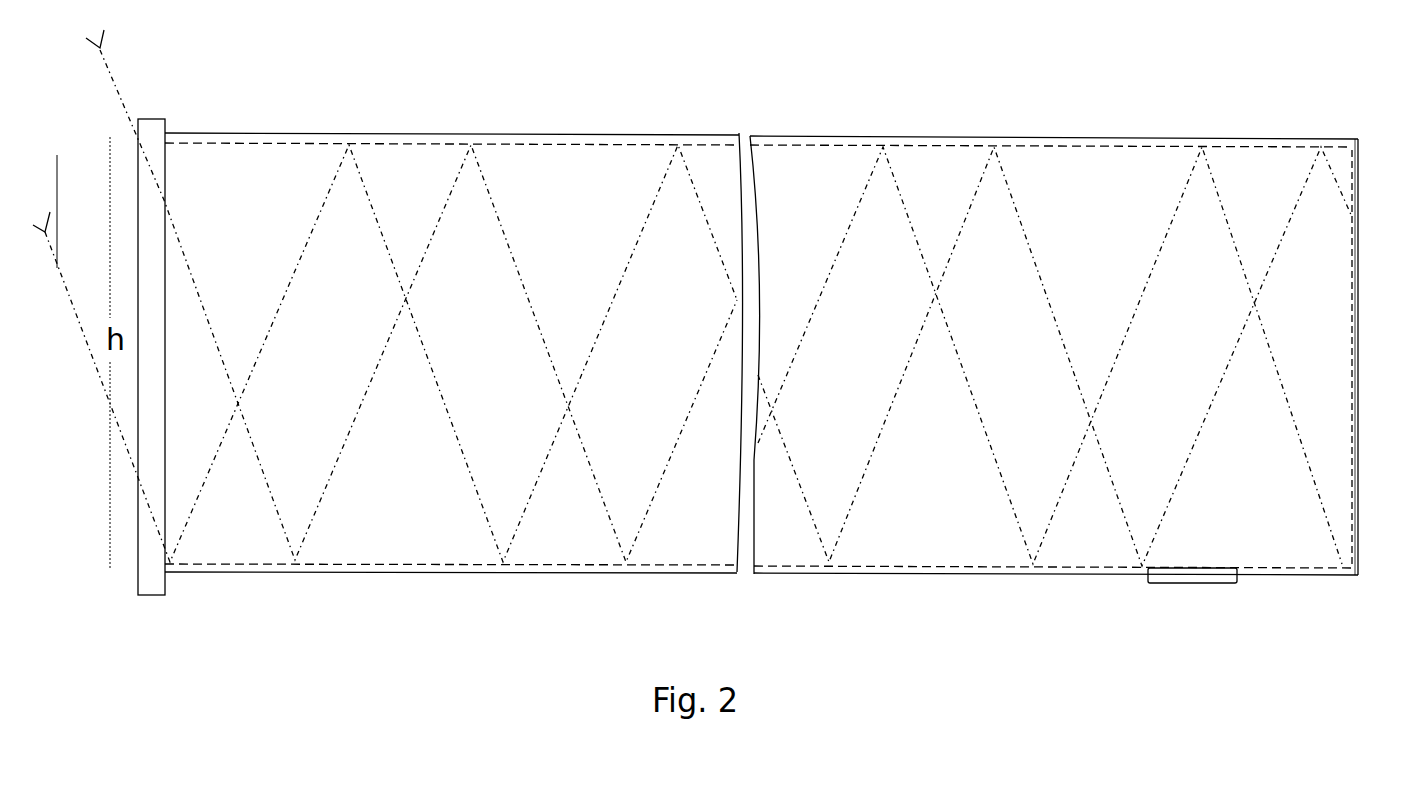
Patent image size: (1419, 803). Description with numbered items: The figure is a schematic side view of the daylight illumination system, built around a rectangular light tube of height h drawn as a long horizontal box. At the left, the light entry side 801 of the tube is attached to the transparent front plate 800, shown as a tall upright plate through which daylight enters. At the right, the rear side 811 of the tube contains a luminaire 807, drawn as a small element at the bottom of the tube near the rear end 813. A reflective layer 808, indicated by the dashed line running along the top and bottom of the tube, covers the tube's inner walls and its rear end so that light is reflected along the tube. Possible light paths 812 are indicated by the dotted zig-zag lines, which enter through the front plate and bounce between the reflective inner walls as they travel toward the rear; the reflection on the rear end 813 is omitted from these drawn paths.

The transparent front plate 800 is at (148, 135).
The light entry side 801 is at (383, 572).
The luminaire 807 is at (1222, 575).
The reflective layer 808 is at (398, 143).
The rear side 811 is at (849, 571).
The light paths 812 is at (110, 70).
The rear end 813 is at (1358, 218).